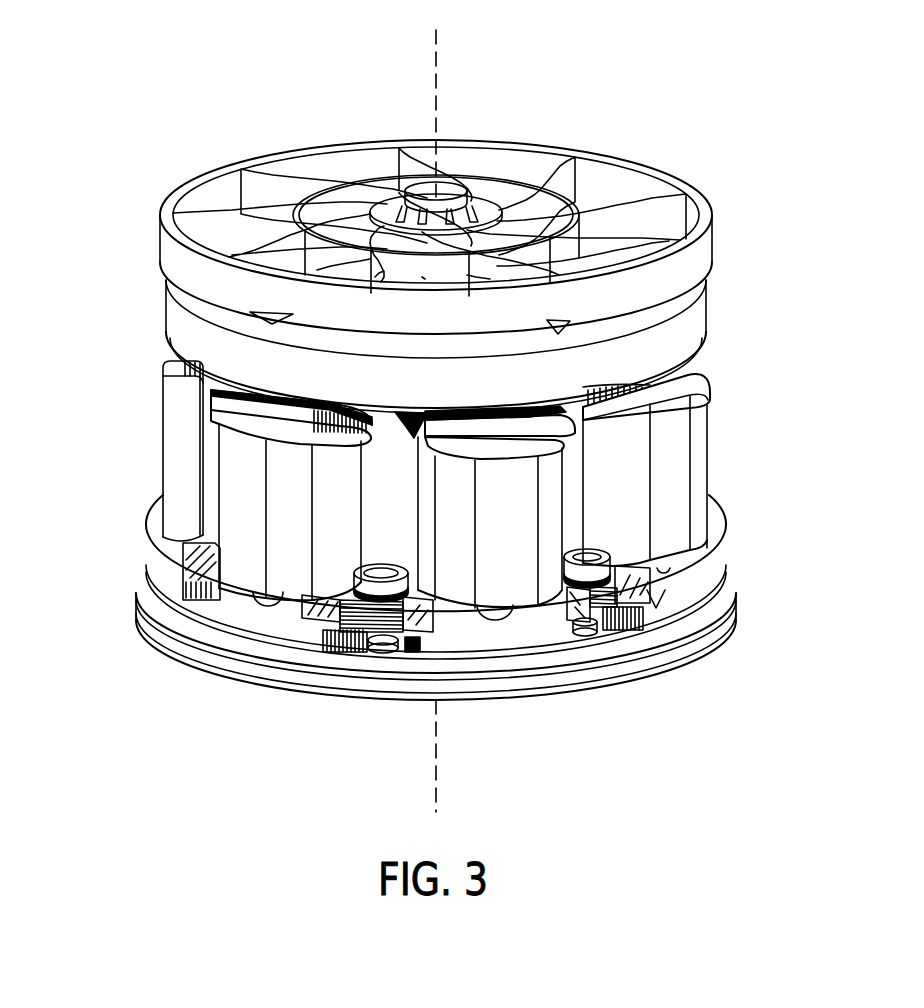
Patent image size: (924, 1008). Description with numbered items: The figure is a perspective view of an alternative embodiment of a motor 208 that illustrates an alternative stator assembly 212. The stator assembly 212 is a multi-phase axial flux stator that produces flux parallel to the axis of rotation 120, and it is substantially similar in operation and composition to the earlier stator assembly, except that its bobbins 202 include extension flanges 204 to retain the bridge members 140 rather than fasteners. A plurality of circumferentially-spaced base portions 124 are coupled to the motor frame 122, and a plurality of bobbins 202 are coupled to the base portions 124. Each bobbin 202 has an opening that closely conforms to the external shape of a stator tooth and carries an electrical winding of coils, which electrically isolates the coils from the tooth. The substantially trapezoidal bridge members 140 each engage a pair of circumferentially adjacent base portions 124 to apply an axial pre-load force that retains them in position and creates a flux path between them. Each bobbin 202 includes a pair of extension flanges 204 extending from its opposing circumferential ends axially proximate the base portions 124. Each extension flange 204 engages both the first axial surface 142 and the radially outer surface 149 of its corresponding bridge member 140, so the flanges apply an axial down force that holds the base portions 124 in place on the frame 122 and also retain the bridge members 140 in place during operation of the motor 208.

The axis of rotation 120 is at (438, 88).
The motor frame 122 is at (728, 606).
The base portions 124 is at (228, 612).
The bridge members 140 is at (350, 598).
The first axial surface 142 is at (360, 618).
The radially outer surface 149 is at (365, 625).
The bobbins 202 is at (676, 494).
The extension flanges 204 is at (313, 603).
The motor 208 is at (782, 114).
The stator assembly 212 is at (488, 564).